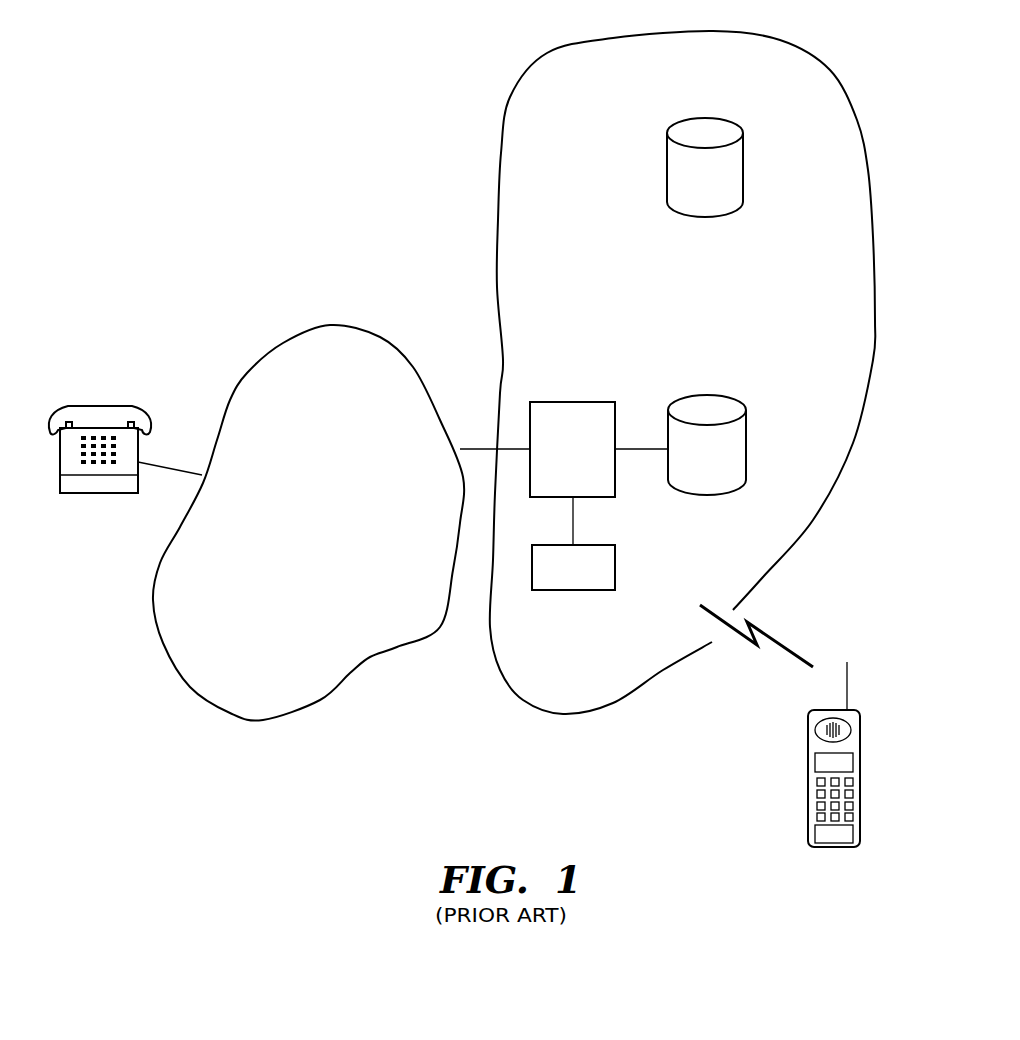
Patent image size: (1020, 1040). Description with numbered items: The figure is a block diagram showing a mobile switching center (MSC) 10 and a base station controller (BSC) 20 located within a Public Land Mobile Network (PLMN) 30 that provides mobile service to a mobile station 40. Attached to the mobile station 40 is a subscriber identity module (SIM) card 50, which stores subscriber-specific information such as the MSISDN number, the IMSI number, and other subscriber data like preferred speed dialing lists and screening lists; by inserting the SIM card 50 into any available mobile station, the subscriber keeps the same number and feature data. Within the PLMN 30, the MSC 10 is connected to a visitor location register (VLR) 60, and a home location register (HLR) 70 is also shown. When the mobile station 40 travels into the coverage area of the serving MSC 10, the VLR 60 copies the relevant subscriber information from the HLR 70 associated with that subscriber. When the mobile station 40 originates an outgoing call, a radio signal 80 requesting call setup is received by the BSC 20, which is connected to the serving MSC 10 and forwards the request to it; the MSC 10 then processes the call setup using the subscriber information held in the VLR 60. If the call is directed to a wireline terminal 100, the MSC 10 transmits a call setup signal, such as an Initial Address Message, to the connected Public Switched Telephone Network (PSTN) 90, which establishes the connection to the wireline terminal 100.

The mobile switching center (MSC) 10 is at (585, 402).
The base station controller (BSC) 20 is at (615, 562).
The Public Land Mobile Network (PLMN) 30 is at (870, 265).
The mobile station 40 is at (860, 773).
The subscriber identity module (SIM) card 50 is at (853, 831).
The visitor location register (VLR) 60 is at (746, 438).
The home location register (HLR) 70 is at (743, 163).
The radio signal 80 is at (784, 638).
The Public Switched Telephone Network (PSTN) 90 is at (322, 697).
The wireline terminal 100 is at (95, 402).